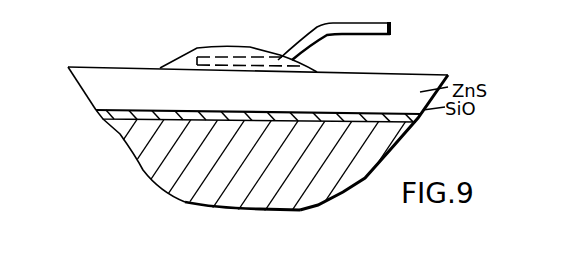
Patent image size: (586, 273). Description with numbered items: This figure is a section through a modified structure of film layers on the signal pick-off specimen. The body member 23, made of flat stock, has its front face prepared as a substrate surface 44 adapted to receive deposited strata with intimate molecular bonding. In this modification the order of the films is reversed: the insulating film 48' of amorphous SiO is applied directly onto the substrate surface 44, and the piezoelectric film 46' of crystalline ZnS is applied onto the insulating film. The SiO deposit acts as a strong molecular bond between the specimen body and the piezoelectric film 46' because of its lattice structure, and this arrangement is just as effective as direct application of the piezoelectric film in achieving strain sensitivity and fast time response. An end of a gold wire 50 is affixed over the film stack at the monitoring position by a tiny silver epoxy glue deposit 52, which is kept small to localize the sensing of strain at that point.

The body member 23 is at (155, 170).
The substrate surface 44 is at (412, 125).
The piezoelectric film 46' is at (244, 88).
The insulating film 48' is at (234, 119).
The gold wire 50 is at (366, 23).
The silver epoxy glue deposit 52 is at (189, 50).